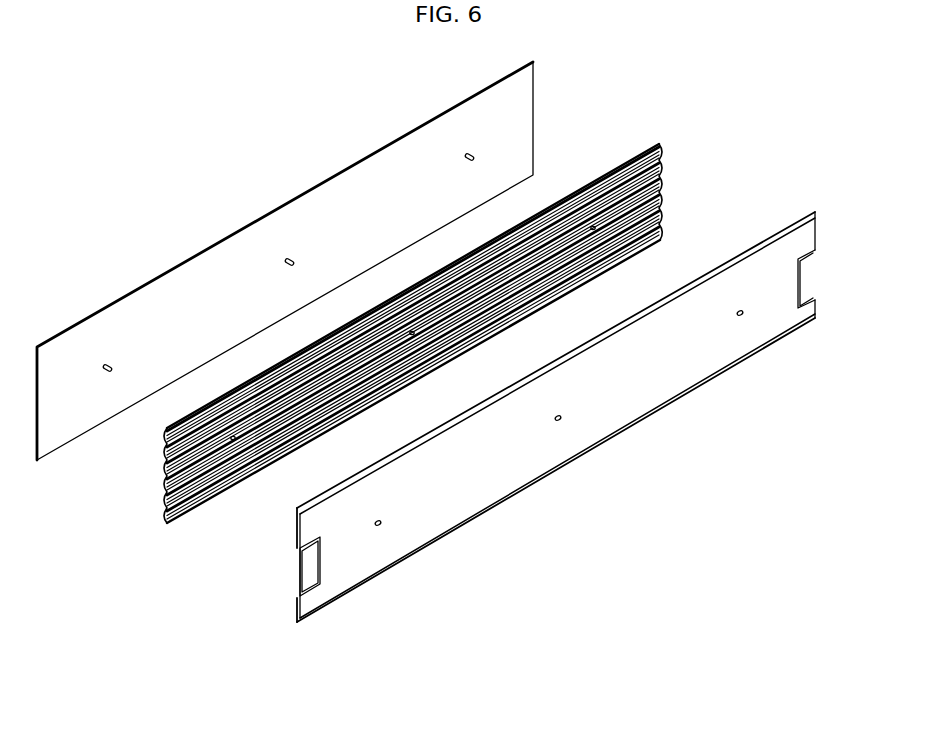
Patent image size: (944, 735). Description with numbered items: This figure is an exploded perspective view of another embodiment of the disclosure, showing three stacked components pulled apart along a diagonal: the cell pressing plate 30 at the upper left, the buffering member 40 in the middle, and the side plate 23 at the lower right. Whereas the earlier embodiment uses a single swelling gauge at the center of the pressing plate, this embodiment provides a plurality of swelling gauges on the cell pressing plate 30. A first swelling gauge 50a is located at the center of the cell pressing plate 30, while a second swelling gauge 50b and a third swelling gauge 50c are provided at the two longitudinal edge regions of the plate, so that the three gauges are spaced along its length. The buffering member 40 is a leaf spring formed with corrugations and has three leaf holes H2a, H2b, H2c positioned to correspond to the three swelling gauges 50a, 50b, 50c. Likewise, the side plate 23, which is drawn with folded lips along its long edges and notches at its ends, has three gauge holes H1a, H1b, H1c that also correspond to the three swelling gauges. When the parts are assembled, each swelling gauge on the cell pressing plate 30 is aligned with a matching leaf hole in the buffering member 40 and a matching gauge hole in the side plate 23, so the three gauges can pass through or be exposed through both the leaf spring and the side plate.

The side plate 23 is at (808, 240).
The cell pressing plate 30 is at (527, 120).
The buffering member 40 is at (657, 184).
The first swelling gauge 50a is at (288, 258).
The second swelling gauge 50b is at (106, 364).
The third swelling gauge 50c is at (466, 152).
The gauge hole H1a is at (558, 419).
The gauge hole H1b is at (378, 524).
The gauge hole H1c is at (740, 314).
The leaf hole H2a is at (412, 334).
The leaf hole H2b is at (233, 439).
The leaf hole H2c is at (593, 229).